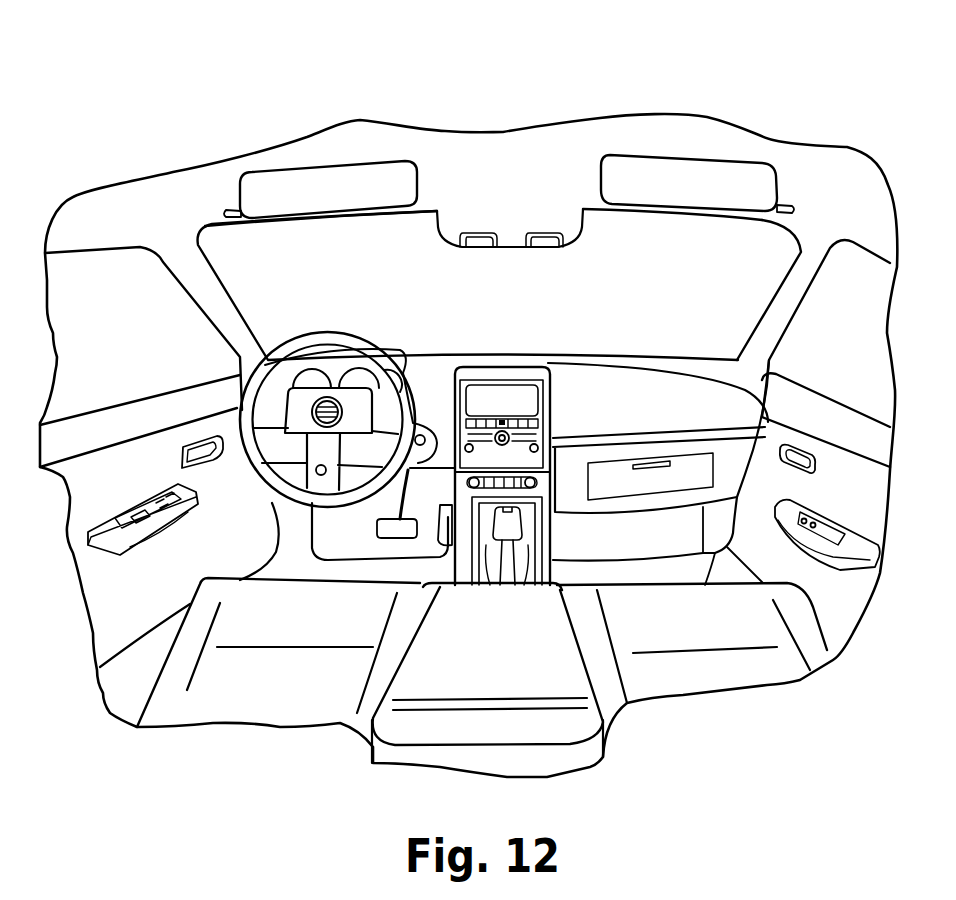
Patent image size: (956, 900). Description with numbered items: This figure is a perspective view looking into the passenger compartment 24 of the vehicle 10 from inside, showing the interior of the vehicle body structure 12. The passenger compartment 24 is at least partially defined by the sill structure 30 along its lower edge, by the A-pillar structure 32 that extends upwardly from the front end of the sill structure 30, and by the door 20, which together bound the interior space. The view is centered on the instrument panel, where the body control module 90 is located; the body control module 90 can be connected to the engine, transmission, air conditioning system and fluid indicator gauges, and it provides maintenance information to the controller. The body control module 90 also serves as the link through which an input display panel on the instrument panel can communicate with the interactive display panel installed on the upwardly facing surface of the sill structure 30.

The vehicle 10 is at (467, 74).
The vehicle body structure 12 is at (508, 122).
The passenger compartment 24 is at (218, 243).
The A-pillar structure 32 is at (210, 292).
The door 20 is at (147, 415).
The body control module 90 is at (522, 394).
The sill structure 30 is at (167, 618).